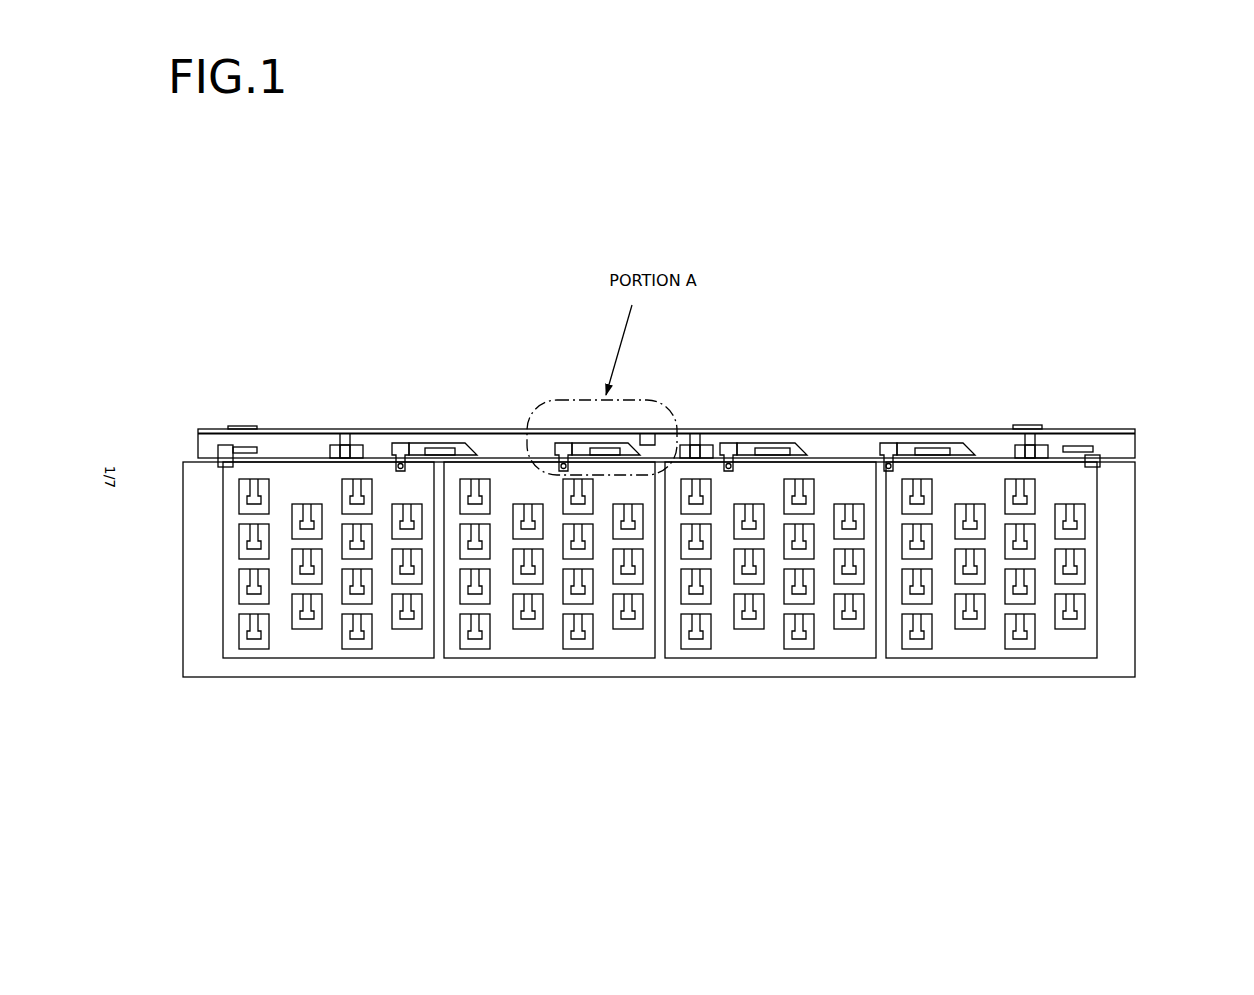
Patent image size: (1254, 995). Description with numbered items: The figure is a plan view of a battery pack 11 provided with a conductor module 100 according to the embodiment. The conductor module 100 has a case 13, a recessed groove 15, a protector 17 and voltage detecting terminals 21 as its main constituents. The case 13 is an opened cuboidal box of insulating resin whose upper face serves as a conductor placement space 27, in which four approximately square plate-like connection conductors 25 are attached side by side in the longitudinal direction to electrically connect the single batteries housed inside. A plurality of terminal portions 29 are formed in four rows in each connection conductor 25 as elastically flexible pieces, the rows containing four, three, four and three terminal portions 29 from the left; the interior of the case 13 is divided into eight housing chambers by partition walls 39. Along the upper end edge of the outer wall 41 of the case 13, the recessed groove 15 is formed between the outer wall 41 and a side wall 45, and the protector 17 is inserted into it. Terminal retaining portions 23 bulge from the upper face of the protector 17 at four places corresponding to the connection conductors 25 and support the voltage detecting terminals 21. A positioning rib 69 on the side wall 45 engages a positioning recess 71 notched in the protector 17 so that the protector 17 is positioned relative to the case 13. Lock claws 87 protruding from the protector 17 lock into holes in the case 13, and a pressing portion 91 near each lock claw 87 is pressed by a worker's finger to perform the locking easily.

The conductor module 100 is at (1140, 419).
The battery pack 11 is at (231, 328).
The case 13 is at (1137, 655).
The recessed groove 15 is at (268, 430).
The protector 17 is at (854, 428).
The voltage detecting terminal 21 is at (386, 432).
The terminal retaining portion 23 is at (422, 432).
The connection conductor 25 is at (288, 478).
The conductor placement space 27 is at (226, 574).
The terminal portion 29 is at (968, 622).
The partition wall 39 is at (438, 637).
The outer wall 41 is at (1060, 440).
The side wall 45 is at (1095, 440).
The positioning rib 69 is at (645, 466).
The positioning recess 71 is at (646, 430).
The lock claw 87 is at (346, 432).
The pressing portion 91 is at (333, 432).